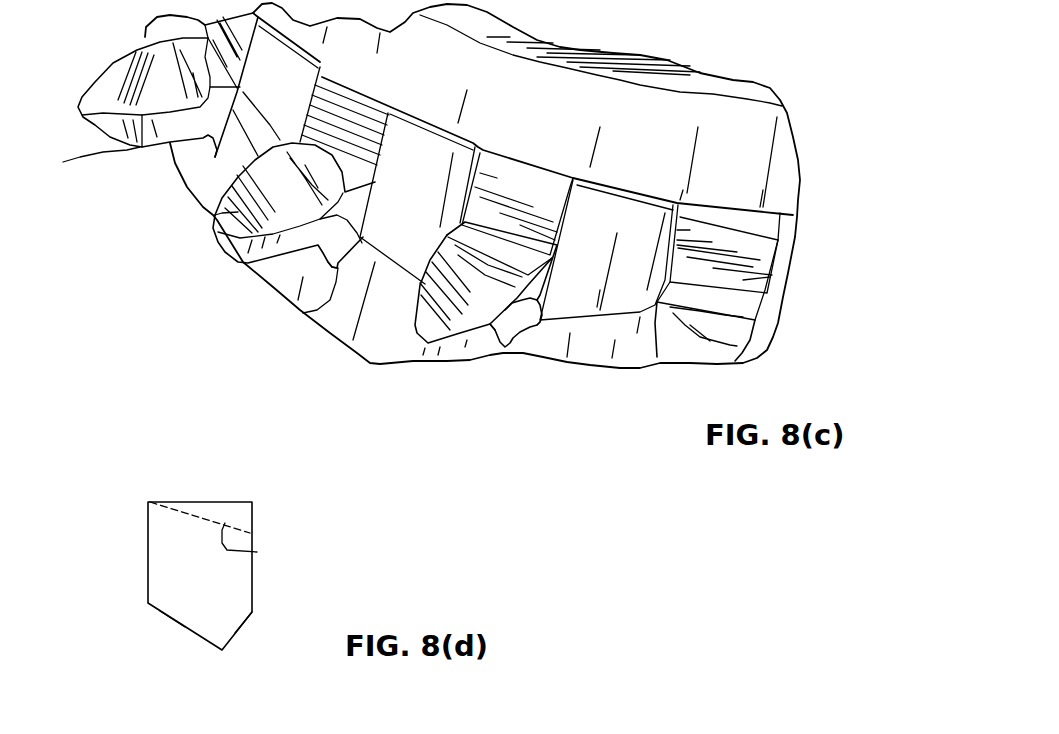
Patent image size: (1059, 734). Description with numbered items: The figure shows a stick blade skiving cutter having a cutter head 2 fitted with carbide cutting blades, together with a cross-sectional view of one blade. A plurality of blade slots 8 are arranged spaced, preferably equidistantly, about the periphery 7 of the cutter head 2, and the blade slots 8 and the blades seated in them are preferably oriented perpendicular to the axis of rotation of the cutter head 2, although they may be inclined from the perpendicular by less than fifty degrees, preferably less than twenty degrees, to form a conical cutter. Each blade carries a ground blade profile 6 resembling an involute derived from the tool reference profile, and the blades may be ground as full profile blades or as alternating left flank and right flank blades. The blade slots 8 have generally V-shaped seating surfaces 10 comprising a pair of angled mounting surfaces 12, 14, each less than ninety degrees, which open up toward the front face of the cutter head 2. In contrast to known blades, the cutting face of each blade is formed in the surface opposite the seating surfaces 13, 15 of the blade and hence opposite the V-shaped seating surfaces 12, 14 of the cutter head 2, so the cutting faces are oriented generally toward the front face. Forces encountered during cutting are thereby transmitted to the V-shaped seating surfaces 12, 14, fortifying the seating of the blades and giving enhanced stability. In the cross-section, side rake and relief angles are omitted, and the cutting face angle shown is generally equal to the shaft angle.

The cutter head 2 is at (431, 185).
The blade profile 6 is at (398, 226).
The periphery 7 is at (400, 195).
The blade slot 8 is at (606, 301).
The V-shaped seating surface 10 is at (378, 347).
The angled mounting surface 12 is at (553, 380).
The seating surface of the cutting blade 13 is at (270, 643).
The angled mounting surface 14 is at (453, 379).
The seating surface of the cutting blade 15 is at (159, 645).